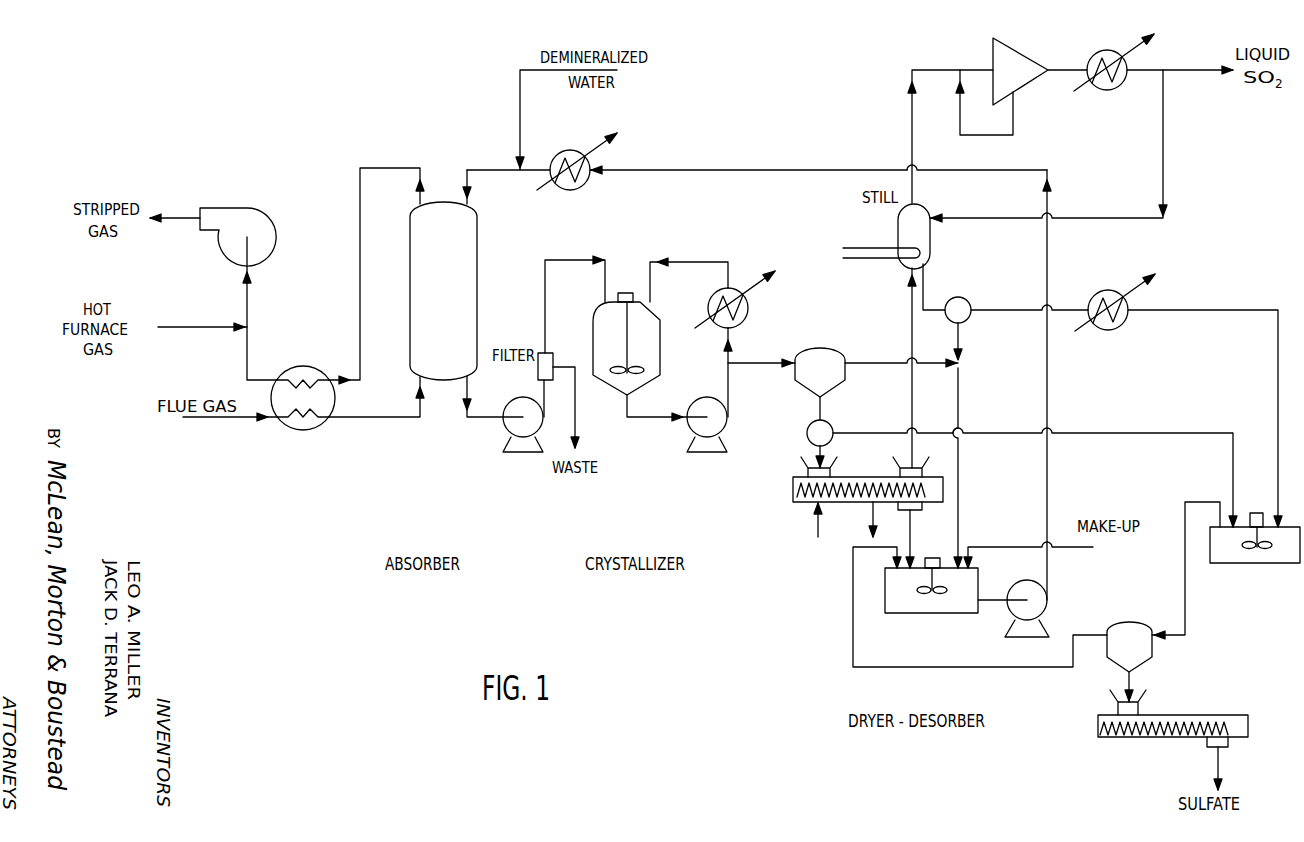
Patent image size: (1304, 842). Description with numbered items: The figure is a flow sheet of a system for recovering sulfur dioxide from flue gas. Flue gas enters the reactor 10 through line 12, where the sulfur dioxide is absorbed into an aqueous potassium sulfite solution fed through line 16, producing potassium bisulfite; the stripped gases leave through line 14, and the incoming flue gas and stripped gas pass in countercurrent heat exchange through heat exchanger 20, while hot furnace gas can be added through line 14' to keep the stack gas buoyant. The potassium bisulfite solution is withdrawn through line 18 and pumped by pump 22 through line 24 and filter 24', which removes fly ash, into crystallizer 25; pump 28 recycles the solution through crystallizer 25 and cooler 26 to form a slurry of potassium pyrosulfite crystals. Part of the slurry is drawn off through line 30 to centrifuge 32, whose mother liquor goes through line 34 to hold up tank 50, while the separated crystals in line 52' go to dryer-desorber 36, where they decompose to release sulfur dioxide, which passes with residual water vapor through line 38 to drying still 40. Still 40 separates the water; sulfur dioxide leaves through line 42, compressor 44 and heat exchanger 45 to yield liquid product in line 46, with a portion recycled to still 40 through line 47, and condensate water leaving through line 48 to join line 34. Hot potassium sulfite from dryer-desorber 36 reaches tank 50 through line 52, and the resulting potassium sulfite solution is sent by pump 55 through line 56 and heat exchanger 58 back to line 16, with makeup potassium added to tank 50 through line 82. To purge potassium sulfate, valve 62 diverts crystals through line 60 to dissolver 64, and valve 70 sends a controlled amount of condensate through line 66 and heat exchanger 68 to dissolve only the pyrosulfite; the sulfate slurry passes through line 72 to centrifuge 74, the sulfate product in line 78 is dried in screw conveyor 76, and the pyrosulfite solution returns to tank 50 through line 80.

The reactor 10 is at (483, 254).
The line 12 is at (377, 416).
The line 14 is at (376, 264).
The line 14' is at (202, 319).
The line 16 is at (495, 166).
The line 18 is at (467, 420).
The heat exchanger 20 is at (315, 364).
The pump 22 is at (503, 446).
The line 24 is at (558, 304).
The filter 24' is at (558, 388).
The crystallizer 25 is at (660, 343).
The cooler 26 is at (708, 306).
The pump 28 is at (723, 440).
The line 30 is at (752, 360).
The centrifuge 32 is at (838, 350).
The line 34 is at (882, 362).
The dryer-desorber 36 is at (867, 475).
The line 38 is at (912, 418).
The drying still 40 is at (931, 237).
The line 42 is at (912, 115).
The compressor 44 is at (1015, 60).
The heat exchanger 45 is at (1114, 46).
The line 46 is at (1192, 66).
The line 47 is at (1125, 215).
The line 48 is at (932, 306).
The hold up tank 50 is at (935, 615).
The line 52 is at (921, 539).
The line 52' is at (841, 408).
The pump 55 is at (1045, 614).
The line 56 is at (1047, 380).
The heat exchanger 58 is at (581, 147).
The line 60 is at (1117, 428).
The valve 62 is at (805, 438).
The dissolver 64 is at (1250, 565).
The line 66 is at (1017, 318).
The heat exchanger 68 is at (1120, 326).
The valve 70 is at (966, 302).
The line 72 is at (1185, 600).
The centrifuge 74 is at (1125, 622).
The screw conveyor 76 is at (1150, 740).
The line 78 is at (1134, 684).
The line 80 is at (853, 575).
The line 82 is at (1005, 541).